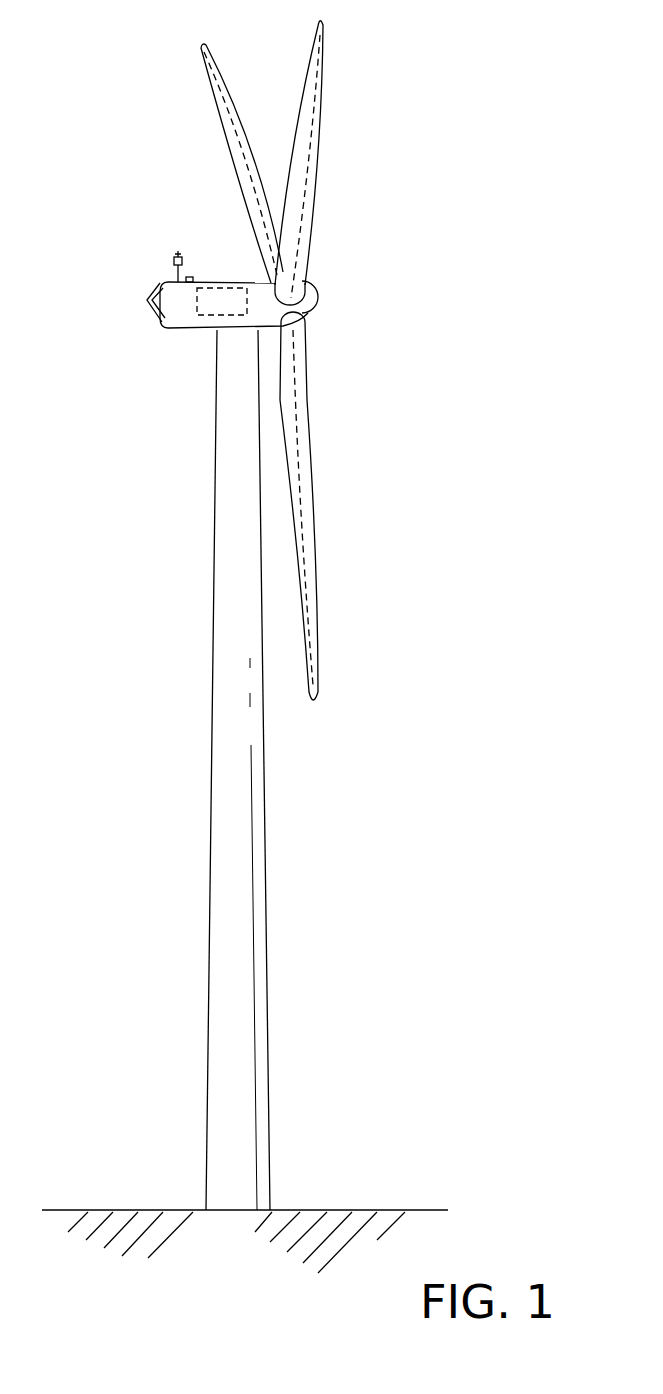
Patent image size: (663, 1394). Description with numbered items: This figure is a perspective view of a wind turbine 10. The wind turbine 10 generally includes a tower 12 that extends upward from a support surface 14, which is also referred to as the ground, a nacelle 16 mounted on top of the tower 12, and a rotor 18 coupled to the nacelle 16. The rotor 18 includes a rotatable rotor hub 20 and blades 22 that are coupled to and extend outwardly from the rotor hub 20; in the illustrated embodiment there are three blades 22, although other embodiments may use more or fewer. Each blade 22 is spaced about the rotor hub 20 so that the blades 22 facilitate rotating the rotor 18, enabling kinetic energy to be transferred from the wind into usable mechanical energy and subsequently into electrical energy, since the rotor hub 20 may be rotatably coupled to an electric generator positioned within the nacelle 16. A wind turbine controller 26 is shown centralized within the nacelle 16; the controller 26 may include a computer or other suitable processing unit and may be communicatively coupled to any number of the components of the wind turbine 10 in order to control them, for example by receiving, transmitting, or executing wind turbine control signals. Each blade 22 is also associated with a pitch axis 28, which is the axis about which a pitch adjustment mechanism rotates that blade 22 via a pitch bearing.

The wind turbine 10 is at (447, 108).
The tower 12 is at (223, 890).
The support surface 14 is at (130, 1210).
The nacelle 16 is at (192, 330).
The rotor 18 is at (323, 277).
The rotor hub 20 is at (317, 303).
The blade 22 is at (312, 68).
The wind turbine controller 26 is at (225, 288).
The pitch axis 28 is at (240, 203).